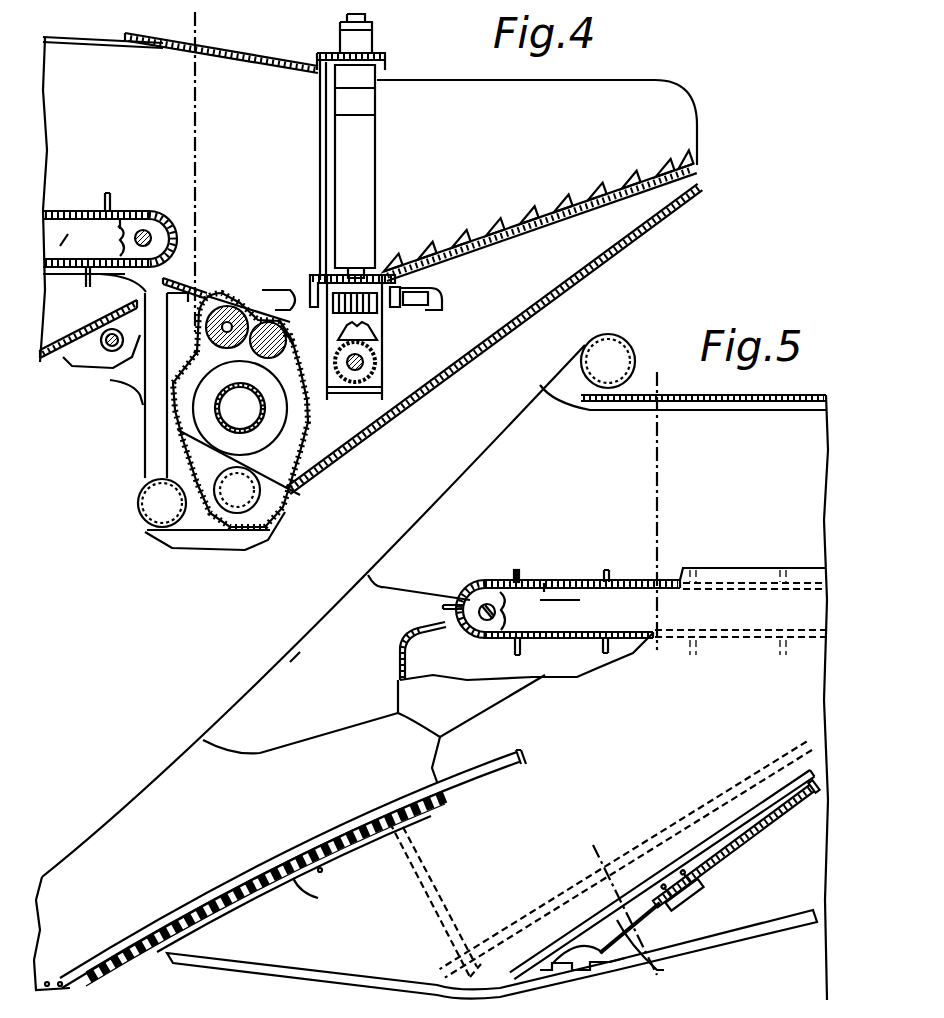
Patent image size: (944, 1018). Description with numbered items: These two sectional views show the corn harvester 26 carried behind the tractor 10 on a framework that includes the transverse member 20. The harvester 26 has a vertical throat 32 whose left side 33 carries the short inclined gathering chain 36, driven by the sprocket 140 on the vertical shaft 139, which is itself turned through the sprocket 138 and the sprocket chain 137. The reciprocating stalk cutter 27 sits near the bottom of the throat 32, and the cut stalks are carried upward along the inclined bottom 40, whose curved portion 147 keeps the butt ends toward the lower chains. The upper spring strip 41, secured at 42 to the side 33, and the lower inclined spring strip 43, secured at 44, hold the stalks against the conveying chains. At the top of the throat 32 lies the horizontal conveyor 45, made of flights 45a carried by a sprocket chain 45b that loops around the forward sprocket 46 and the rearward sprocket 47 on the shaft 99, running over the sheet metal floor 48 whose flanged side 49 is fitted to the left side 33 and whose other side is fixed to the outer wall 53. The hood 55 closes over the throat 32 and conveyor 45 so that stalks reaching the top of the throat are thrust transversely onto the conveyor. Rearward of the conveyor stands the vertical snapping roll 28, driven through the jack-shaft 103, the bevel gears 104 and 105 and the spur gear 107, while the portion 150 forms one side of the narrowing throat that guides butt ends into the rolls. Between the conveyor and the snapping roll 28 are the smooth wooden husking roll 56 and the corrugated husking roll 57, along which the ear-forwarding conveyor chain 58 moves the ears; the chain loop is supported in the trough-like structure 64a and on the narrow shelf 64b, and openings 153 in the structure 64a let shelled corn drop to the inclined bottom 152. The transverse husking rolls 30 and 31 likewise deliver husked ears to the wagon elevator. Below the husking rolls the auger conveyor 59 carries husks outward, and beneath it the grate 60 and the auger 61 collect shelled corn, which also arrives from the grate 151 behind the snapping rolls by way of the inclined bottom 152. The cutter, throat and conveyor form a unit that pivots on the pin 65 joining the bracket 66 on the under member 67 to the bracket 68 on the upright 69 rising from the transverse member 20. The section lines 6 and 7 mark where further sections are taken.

In FIG. 5, the section line 6- 6 is at (672, 606).
In FIG. 5, the section line 7- 7 is at (681, 921).
In FIG. 4, the tractor 10 is at (178, 27).
In FIG. 4, the transverse member 20 is at (137, 501).
In FIG. 5, the harvester 26 is at (331, 606).
In FIG. 5, the reciprocating stalk cutter 27 is at (583, 968).
In FIG. 4, the snapping roll 28 is at (370, 198).
In FIG. 4, the husking roll 30 is at (287, 362).
In FIG. 4, the husking roll 31 is at (232, 305).
In FIG. 5, the vertical throat 32 is at (158, 797).
In FIG. 5, the left side 33 is at (288, 674).
In FIG. 5, the short inclined gathering chain 36 is at (267, 900).
In FIG. 5, the inclined bottom 40 is at (738, 867).
In FIG. 5, the upper spring strip 41 is at (433, 810).
In FIG. 5, the securing point 42 is at (322, 880).
In FIG. 5, the lower inclined spring strip 43 is at (768, 822).
In FIG. 5, the securing point 44 is at (698, 887).
In FIG. 4, the horizontal conveyor 45 is at (75, 198).
In FIG. 5, the horizontal conveyor 45 is at (580, 580).
In FIG. 4, the flights 45a is at (110, 196).
In FIG. 5, the flights 45a is at (516, 570).
In FIG. 4, the sprocket chain 45b is at (120, 214).
In FIG. 5, the sprocket chain 45b is at (545, 582).
In FIG. 5, the sprocket 46 is at (503, 617).
In FIG. 4, the sprocket 47 is at (153, 237).
In FIG. 4, the sheet metal floor 48 is at (74, 237).
In FIG. 5, the sheet metal floor 48 is at (582, 593).
In FIG. 5, the flanged side 49 is at (740, 573).
In FIG. 4, the outer wall 53 is at (62, 118).
In FIG. 5, the hood 55 is at (760, 392).
In FIG. 4, the smooth wooden husking roll 56 is at (262, 320).
In FIG. 4, the corrugated husking roll 57 is at (230, 306).
In FIG. 4, the conveyor chain 58 is at (283, 285).
In FIG. 4, the auger conveyor 59 is at (278, 424).
In FIG. 4, the grate 60 is at (263, 450).
In FIG. 4, the auger 61 is at (263, 494).
In FIG. 4, the trough-like structure 64a is at (424, 310).
In FIG. 4, the narrow shelf 64b is at (305, 340).
In FIG. 4, the pin 65 is at (112, 353).
In FIG. 4, the bracket 66 is at (84, 370).
In FIG. 4, the under member 67 is at (67, 360).
In FIG. 4, the bracket 68 is at (128, 388).
In FIG. 4, the upright 69 is at (150, 446).
In FIG. 4, the shaft 99 is at (118, 246).
In FIG. 4, the jack-shaft 103 is at (355, 373).
In FIG. 4, the bevel gear 104 is at (377, 367).
In FIG. 4, the bevel gear 105 is at (376, 346).
In FIG. 4, the spur gear 107 is at (380, 317).
In FIG. 5, the sprocket chain 137 is at (570, 893).
In FIG. 5, the sprocket 138 is at (482, 948).
In FIG. 5, the vertical shaft 139 is at (444, 886).
In FIG. 5, the sprocket 140 is at (417, 797).
In FIG. 5, the curved portion 147 is at (649, 942).
In FIG. 4, the narrowing throat side 150 is at (262, 148).
In FIG. 4, the grate 151 is at (551, 214).
In FIG. 4, the inclined bottom 152 is at (565, 291).
In FIG. 4, the openings 153 is at (422, 310).